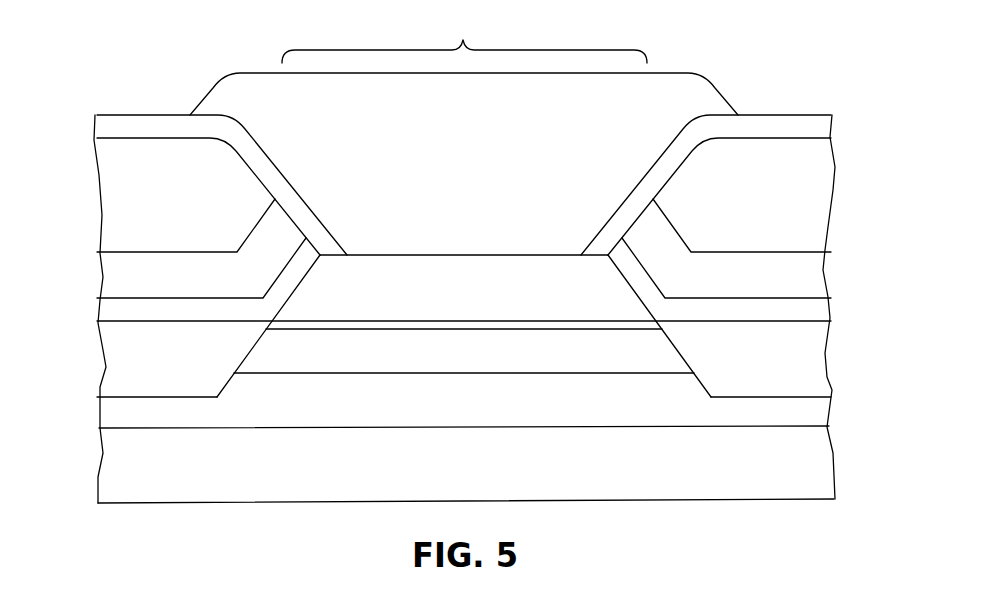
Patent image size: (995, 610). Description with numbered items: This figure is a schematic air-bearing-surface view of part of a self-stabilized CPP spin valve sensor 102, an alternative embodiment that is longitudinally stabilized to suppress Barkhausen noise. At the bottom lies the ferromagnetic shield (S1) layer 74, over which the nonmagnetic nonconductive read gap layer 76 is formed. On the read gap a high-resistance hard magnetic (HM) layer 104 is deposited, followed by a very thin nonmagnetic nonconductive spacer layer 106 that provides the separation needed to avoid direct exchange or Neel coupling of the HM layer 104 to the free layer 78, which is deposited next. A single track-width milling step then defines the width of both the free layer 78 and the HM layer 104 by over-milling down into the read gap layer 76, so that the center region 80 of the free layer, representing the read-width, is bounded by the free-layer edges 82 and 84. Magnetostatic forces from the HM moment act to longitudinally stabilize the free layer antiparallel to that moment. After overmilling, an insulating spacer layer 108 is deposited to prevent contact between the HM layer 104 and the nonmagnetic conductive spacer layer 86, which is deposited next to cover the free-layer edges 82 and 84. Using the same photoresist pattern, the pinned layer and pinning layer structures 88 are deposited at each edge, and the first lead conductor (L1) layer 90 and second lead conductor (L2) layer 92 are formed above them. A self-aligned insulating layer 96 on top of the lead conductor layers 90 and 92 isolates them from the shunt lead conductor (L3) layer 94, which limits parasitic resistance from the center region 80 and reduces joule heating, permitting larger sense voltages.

The center region 80 is at (464, 36).
The self-aligned insulating layer 96 is at (100, 125).
The first lead conductor (L1) layer 90 is at (103, 179).
The second lead conductor (L2) layer 92 is at (823, 189).
The pinned layer and pinning layer structures 88 is at (103, 274).
The free-layer edge 82 is at (305, 277).
The free-layer edge 84 is at (623, 277).
The shunt lead conductor (L3) layer 94 is at (481, 202).
The free layer 78 is at (533, 302).
The nonmagnetic conductive spacer layer 86 is at (105, 310).
The nonmagnetic nonconductive spacer layer 106 is at (385, 328).
The hard magnetic (HM) layer 104 is at (551, 366).
The insulating spacer layer 108 is at (103, 357).
The read gap layer 76 is at (546, 416).
The shield (S1) layer 74 is at (548, 478).
The self-stabilized CPP SV sensor 102 is at (243, 522).